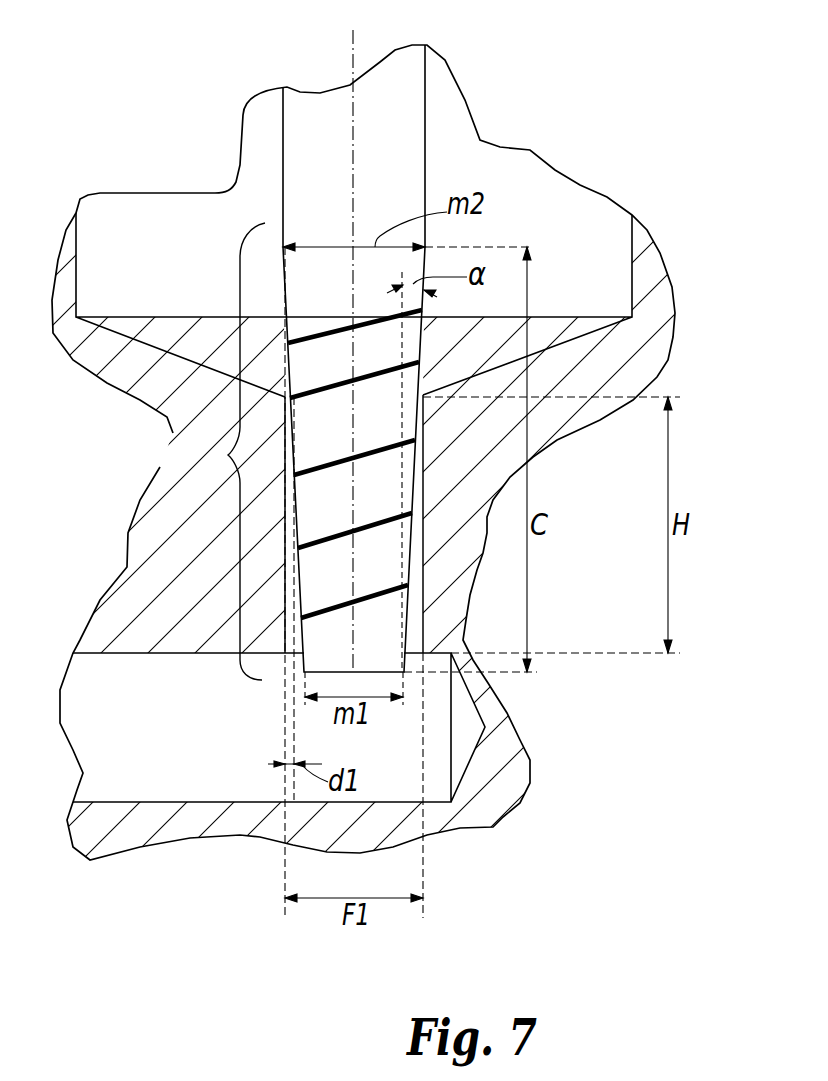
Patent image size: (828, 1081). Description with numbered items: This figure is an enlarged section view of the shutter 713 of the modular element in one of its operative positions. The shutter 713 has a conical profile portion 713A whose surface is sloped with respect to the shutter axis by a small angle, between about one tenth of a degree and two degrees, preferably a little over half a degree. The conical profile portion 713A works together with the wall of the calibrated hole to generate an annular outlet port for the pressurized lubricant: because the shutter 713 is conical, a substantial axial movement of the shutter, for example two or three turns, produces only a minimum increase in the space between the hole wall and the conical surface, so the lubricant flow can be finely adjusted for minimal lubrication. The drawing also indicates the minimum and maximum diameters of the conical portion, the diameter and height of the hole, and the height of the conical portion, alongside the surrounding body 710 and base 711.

The conical profile portion 713A is at (228, 455).
The shutter 713 is at (387, 568).
The fastening body 710 is at (423, 627).
The base member 711 is at (142, 723).